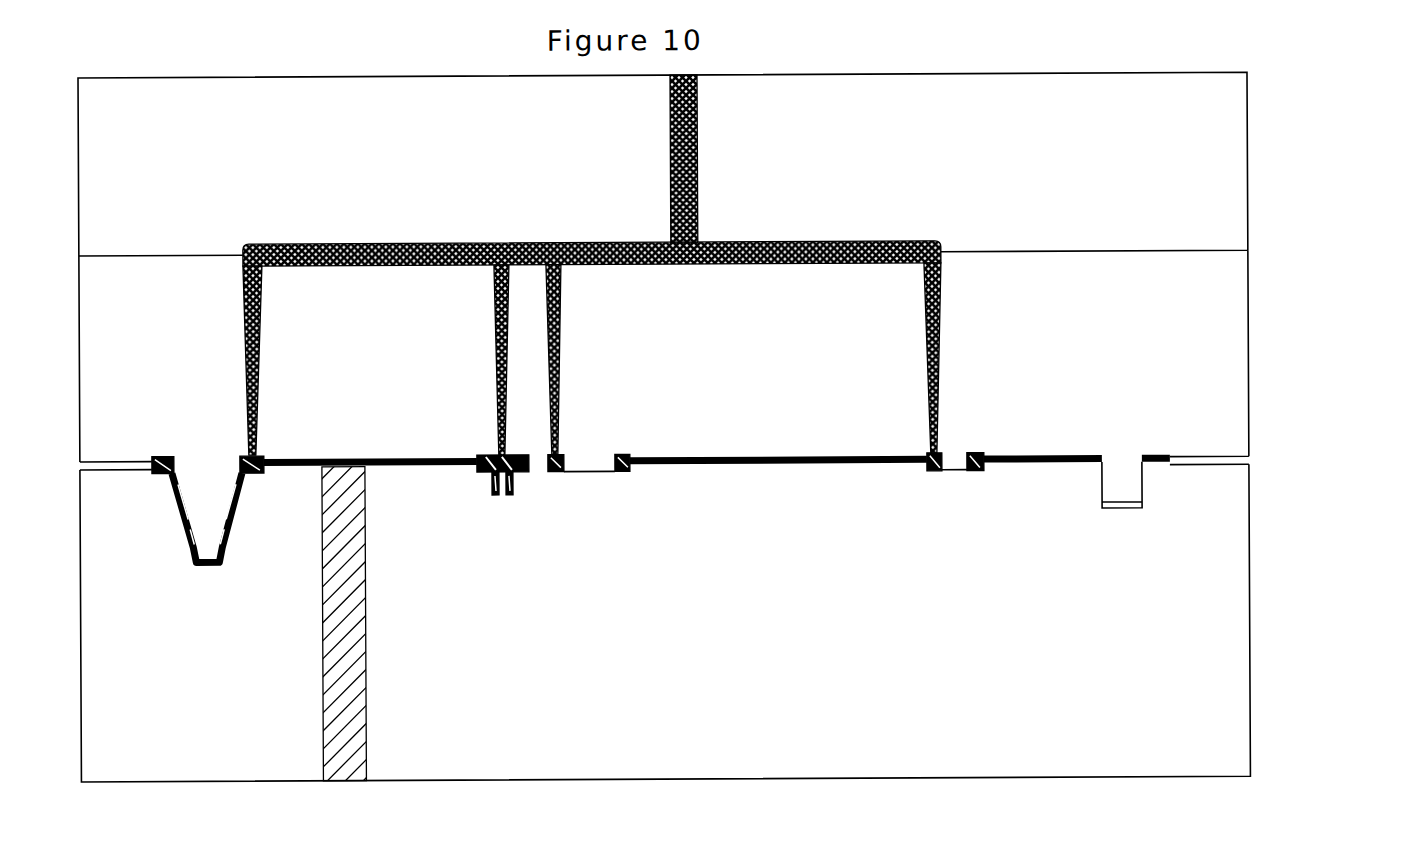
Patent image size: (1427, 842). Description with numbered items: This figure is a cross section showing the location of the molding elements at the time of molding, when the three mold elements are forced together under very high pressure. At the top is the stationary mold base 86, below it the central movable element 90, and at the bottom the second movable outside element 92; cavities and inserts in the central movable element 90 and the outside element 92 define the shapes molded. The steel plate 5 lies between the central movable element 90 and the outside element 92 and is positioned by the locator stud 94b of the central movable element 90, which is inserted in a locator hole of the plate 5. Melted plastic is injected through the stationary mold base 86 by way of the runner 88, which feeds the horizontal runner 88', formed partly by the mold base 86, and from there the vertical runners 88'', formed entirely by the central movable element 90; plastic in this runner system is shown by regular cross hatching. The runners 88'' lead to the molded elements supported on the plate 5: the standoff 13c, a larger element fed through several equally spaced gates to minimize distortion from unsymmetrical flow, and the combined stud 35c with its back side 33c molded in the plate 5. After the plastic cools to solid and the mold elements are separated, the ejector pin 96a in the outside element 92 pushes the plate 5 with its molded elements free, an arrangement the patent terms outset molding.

The stationary mold base 86 is at (1213, 171).
The central movable element 90 is at (1217, 366).
The second movable outside element 92 is at (1224, 596).
The runner 88 is at (654, 265).
The runner 88' is at (591, 201).
The runner 88'' is at (654, 360).
The plate 5 is at (848, 468).
The back side 33c is at (480, 459).
The stud 35c is at (512, 483).
The standoff 13c is at (177, 520).
The ejector pin 96a is at (365, 613).
The locator stud 94b is at (1120, 495).